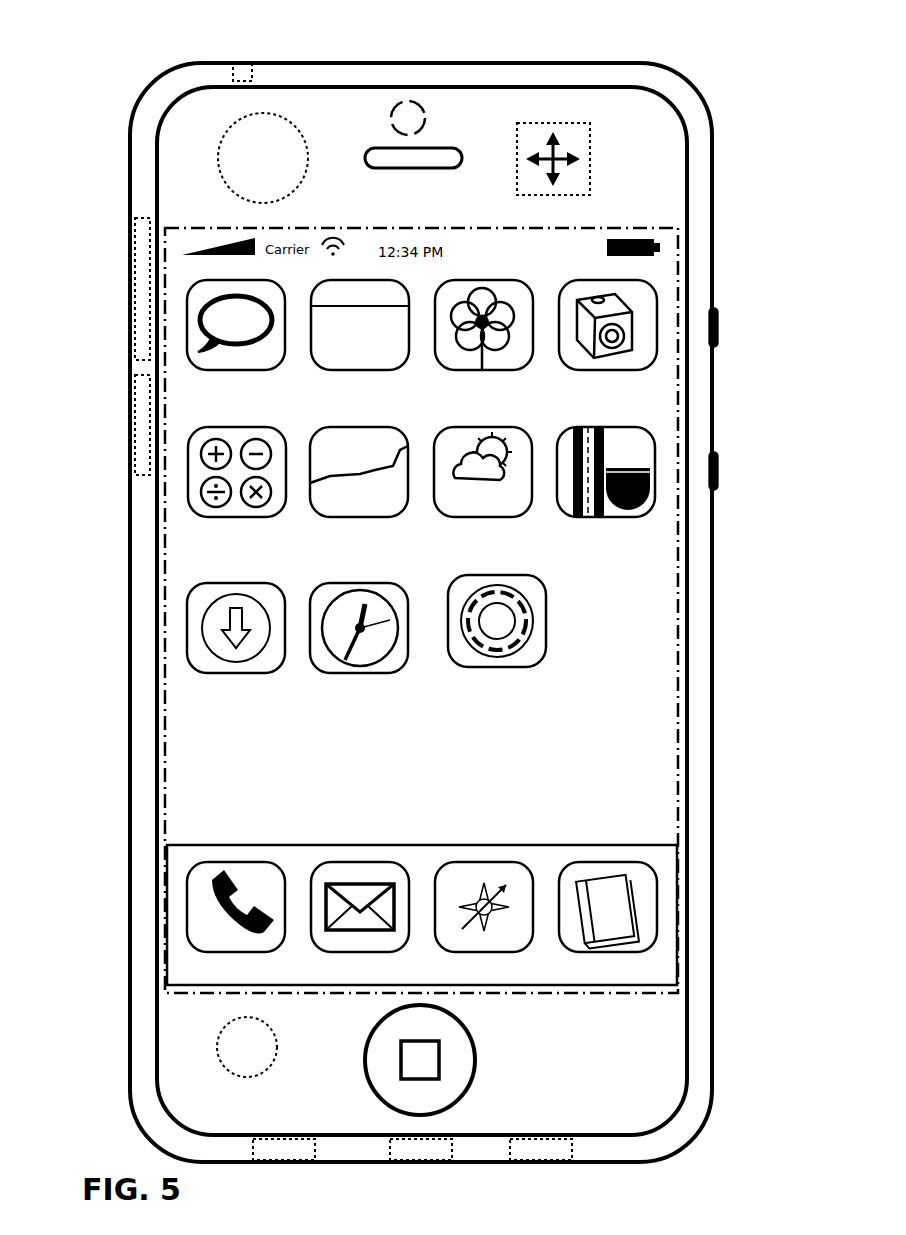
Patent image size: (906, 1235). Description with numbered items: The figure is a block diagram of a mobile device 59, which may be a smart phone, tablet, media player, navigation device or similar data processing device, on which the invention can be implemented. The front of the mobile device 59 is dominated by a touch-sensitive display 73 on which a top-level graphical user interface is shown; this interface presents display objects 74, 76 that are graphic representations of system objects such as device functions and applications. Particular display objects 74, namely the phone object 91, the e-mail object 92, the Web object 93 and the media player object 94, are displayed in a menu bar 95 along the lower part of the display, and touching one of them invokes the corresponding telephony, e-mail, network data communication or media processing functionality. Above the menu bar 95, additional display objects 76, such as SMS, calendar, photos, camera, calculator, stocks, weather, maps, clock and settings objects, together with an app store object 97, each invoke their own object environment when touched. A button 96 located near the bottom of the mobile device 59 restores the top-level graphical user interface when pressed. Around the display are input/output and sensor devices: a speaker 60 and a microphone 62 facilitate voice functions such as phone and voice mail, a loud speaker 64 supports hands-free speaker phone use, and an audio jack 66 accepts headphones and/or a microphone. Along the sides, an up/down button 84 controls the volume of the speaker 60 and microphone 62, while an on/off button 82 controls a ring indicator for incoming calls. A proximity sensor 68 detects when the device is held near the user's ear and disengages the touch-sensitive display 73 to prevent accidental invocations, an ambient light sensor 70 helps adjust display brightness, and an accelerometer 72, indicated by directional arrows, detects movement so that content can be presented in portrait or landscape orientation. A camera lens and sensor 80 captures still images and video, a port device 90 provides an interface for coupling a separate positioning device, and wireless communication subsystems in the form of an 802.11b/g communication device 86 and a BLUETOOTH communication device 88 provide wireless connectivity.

The mobile device 59 is at (507, 62).
The audio jack 66 is at (250, 63).
The proximity sensor 68 is at (232, 182).
The camera lens and sensor 80 is at (418, 110).
The speaker 60 is at (413, 170).
The accelerometer 72 is at (592, 170).
The touch-sensitive display 73 is at (617, 230).
The 802.11b/g communication device 86 is at (140, 268).
The BLUETOOTH communication device 88 is at (137, 423).
The on/off button 82 is at (718, 328).
The up/down button 84 is at (718, 470).
The display objects 76 is at (490, 534).
The app store object 97 is at (235, 583).
The display objects 74 is at (474, 888).
The phone object 91 is at (237, 860).
The e-mail object 92 is at (362, 860).
The Web object 93 is at (487, 863).
The media player object 94 is at (605, 863).
The menu bar 95 is at (562, 990).
The button 96 is at (477, 1062).
The ambient light sensor 70 is at (247, 1077).
The microphone 62 is at (290, 1163).
The port device 90 is at (422, 1163).
The loud speaker 64 is at (543, 1163).